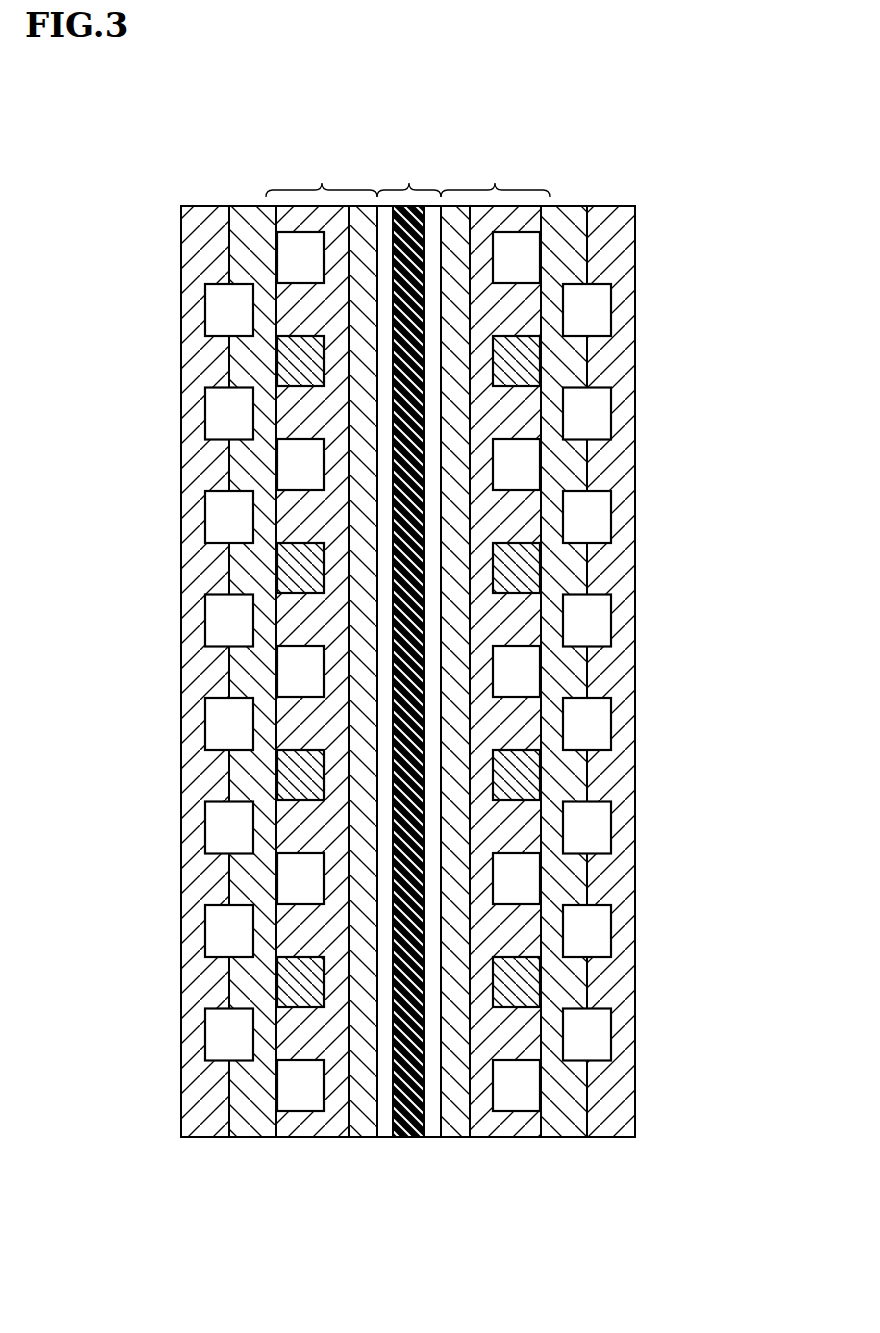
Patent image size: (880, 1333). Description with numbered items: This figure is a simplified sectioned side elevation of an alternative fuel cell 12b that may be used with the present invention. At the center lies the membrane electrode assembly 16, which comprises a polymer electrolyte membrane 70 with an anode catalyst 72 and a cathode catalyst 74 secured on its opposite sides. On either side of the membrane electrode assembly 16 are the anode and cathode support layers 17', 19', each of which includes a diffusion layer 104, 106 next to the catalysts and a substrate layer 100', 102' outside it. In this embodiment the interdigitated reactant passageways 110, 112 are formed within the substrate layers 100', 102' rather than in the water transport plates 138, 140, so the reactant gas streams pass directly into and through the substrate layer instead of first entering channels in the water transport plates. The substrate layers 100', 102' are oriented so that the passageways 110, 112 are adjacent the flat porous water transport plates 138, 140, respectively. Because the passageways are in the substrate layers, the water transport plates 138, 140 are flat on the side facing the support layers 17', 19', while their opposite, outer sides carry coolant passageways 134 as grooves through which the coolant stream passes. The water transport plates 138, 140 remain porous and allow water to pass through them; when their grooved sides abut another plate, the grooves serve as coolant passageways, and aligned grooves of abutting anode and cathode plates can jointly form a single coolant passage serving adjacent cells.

The fuel cell 12b is at (102, 178).
The membrane electrode assembly 16 is at (409, 173).
The anode support layer 17' is at (321, 173).
The cathode support layer 19' is at (495, 173).
The polymer electrolyte membrane 70 is at (413, 1137).
The anode catalyst 72 is at (390, 1138).
The cathode catalyst 74 is at (433, 1133).
The substrate layer 100' is at (272, 709).
The substrate layer 102' is at (536, 712).
The diffusion layer 104 is at (363, 1128).
The diffusion layer 106 is at (452, 1123).
The interdigitated reactant passageway 110 is at (410, 669).
The interdigitated reactant passageway 112 is at (405, 671).
The coolant passageway 134 is at (408, 672).
The water transport plate 138 is at (253, 1135).
The water transport plate 140 is at (197, 1130).